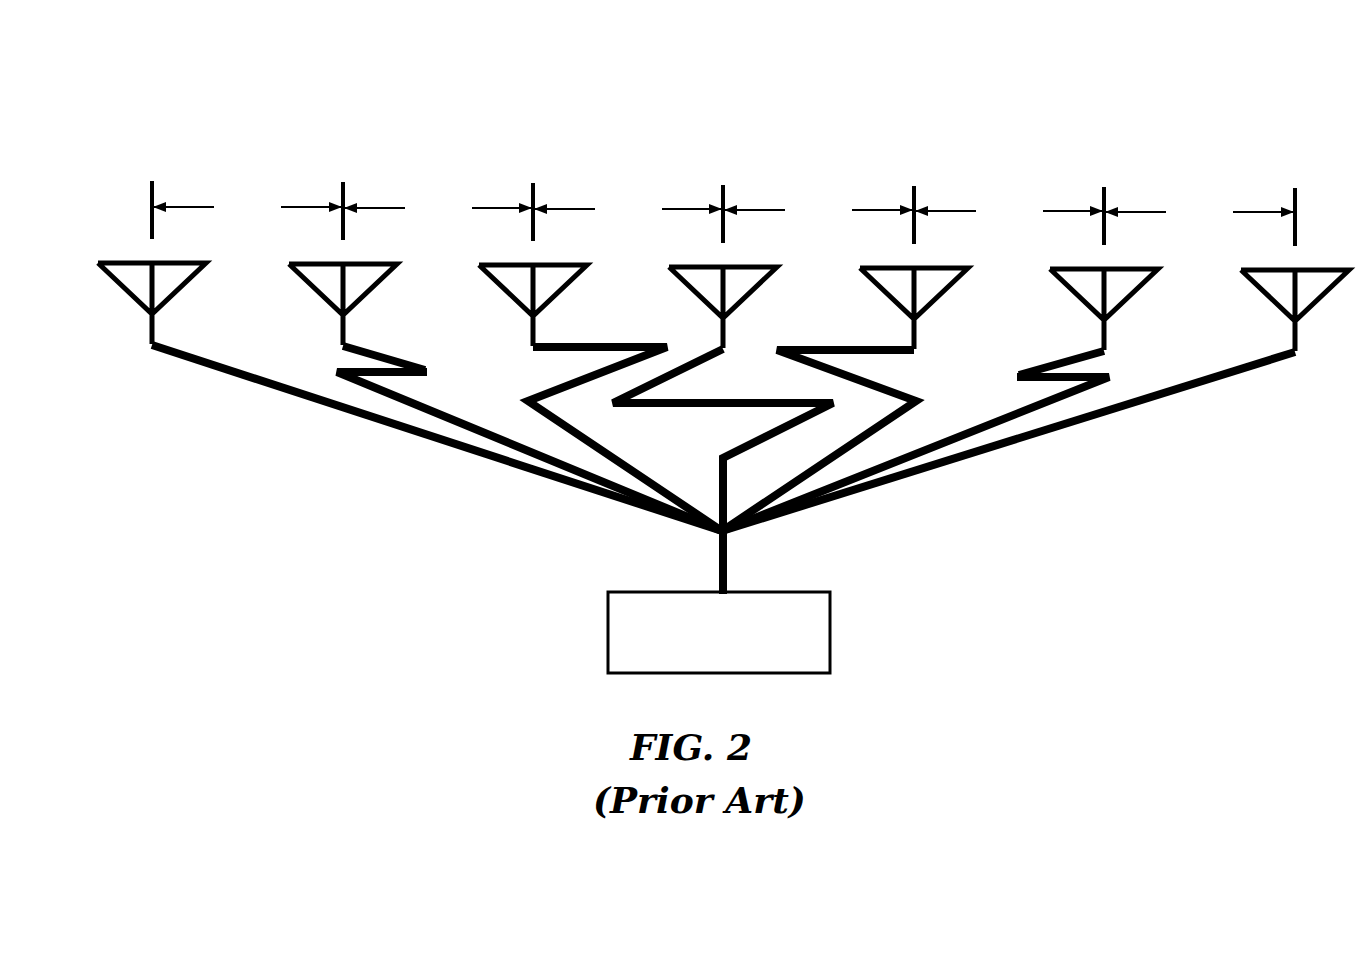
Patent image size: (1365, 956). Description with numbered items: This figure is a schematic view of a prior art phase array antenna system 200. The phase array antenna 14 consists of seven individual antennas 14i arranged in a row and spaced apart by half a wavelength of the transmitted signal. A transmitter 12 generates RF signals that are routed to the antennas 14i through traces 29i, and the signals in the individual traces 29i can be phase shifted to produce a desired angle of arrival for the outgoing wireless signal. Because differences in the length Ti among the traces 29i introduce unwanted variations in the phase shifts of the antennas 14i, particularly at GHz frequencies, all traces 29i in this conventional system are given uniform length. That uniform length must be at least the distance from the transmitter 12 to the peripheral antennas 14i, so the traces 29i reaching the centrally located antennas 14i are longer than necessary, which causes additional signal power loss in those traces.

The phase array antenna system 200 is at (1280, 113).
The phase array antenna 14 is at (84, 283).
The individual antennas 14i is at (503, 288).
The trace length Ti is at (597, 455).
The traces 29i is at (850, 452).
The transmitter 12 is at (830, 621).